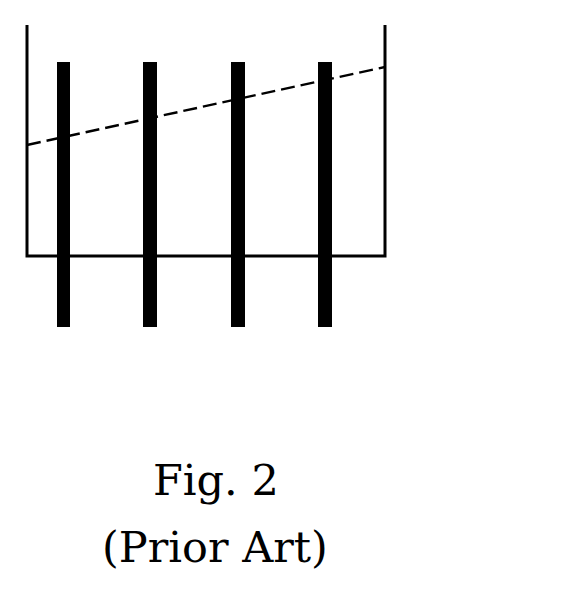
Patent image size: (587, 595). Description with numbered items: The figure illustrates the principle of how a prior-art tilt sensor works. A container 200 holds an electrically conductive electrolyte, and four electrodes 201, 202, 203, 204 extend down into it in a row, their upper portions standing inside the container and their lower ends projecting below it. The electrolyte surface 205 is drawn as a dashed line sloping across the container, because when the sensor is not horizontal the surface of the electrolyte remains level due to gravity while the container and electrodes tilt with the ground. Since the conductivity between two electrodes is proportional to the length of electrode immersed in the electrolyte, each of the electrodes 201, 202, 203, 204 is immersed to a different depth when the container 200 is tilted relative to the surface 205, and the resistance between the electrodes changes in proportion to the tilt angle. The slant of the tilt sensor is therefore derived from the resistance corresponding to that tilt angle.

The electroplating bath container 200 is at (385, 105).
The first electrode 201 is at (63, 330).
The second electrode 202 is at (150, 330).
The third electrode 203 is at (237, 330).
The fourth electrode 204 is at (324, 330).
The plating solution surface 205 is at (355, 177).